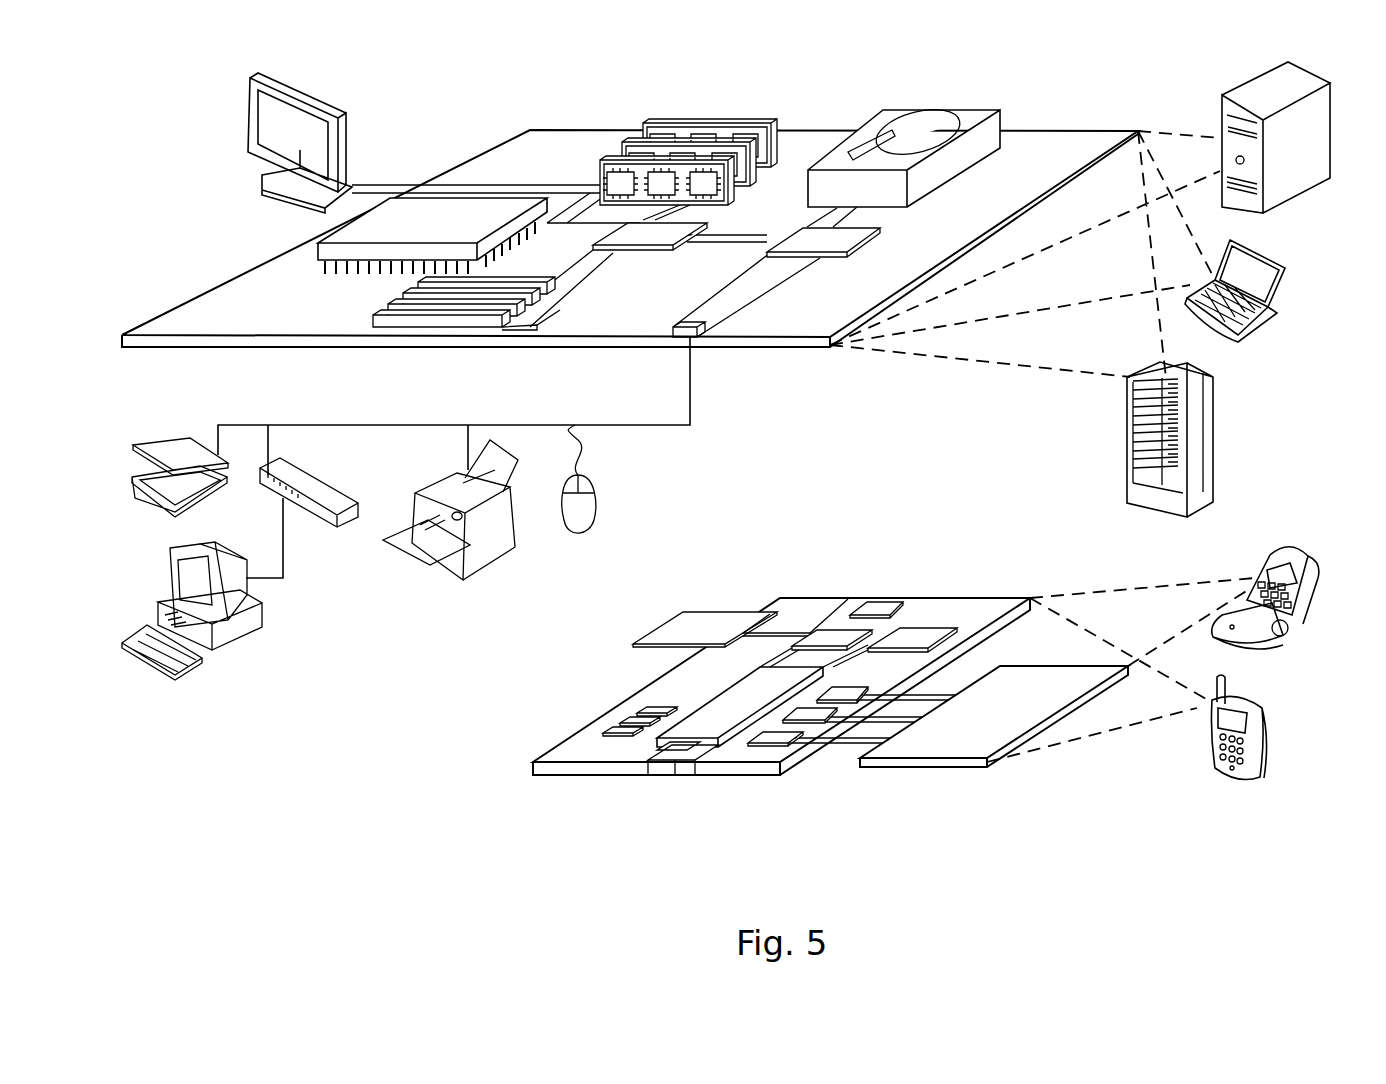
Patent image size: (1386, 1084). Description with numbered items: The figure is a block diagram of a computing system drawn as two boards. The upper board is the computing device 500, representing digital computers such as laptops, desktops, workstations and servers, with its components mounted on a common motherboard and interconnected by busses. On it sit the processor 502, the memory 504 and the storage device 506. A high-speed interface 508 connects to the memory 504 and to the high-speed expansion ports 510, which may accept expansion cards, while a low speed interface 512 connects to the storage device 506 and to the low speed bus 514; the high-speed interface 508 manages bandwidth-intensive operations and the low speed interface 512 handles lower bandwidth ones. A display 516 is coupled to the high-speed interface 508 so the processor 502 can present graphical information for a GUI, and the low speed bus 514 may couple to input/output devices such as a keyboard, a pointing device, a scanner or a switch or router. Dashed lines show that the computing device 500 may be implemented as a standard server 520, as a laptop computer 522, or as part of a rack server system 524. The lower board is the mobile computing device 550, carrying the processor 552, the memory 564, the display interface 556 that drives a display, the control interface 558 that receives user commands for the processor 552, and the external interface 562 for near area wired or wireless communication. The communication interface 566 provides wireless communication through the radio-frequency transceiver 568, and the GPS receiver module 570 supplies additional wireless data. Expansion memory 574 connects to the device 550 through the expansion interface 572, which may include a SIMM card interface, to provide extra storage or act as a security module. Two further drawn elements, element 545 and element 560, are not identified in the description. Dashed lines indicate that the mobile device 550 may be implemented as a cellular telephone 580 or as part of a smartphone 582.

The computing device 500 is at (450, 98).
The processor 502 is at (322, 250).
The memory 504 is at (655, 122).
The storage device 506 is at (893, 112).
The high-speed interface 508 is at (627, 235).
The high-speed expansion ports 510 is at (395, 308).
The low speed interface 512 is at (800, 240).
The low speed bus 514 is at (700, 340).
The display 516 is at (258, 78).
The standard server 520 is at (1220, 113).
The laptop computer 522 is at (1286, 266).
The rack server system 524 is at (1127, 465).
The secondary circuit board 545 is at (953, 748).
The computing device 550 is at (503, 776).
The processor 552 is at (712, 730).
The display interface 556 is at (783, 741).
The control interface 558 is at (818, 715).
The component 560 is at (842, 693).
The external interface 562 is at (675, 763).
The memory 564 is at (623, 723).
The communication interface 566 is at (835, 640).
The transceiver 568 is at (913, 638).
The GPS receiver module 570 is at (888, 603).
The expansion interface 572 is at (763, 608).
The expansion memory 574 is at (684, 615).
The cellular telephone 580 is at (1275, 553).
The smartphone 582 is at (1210, 733).